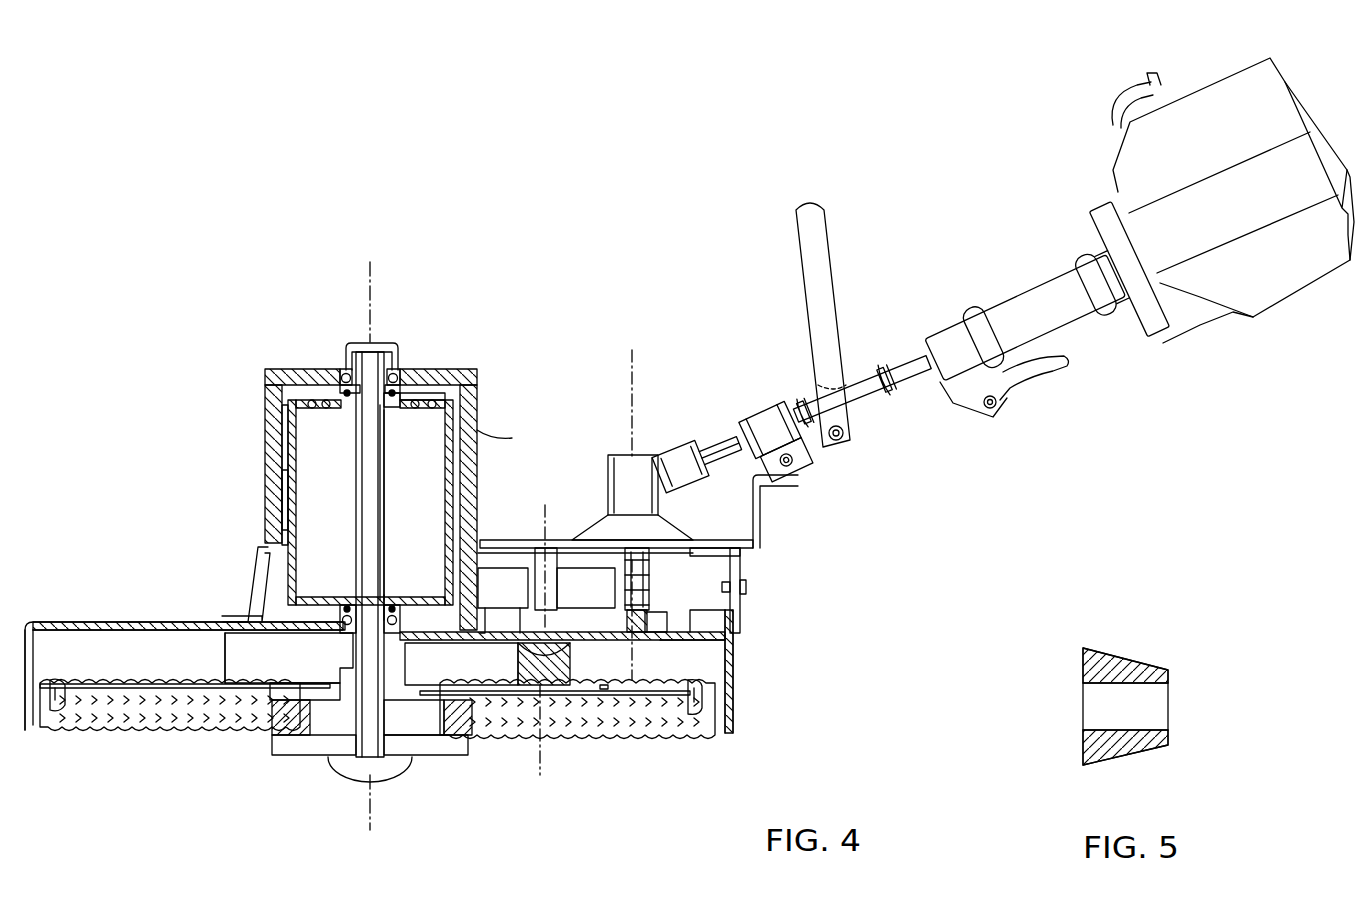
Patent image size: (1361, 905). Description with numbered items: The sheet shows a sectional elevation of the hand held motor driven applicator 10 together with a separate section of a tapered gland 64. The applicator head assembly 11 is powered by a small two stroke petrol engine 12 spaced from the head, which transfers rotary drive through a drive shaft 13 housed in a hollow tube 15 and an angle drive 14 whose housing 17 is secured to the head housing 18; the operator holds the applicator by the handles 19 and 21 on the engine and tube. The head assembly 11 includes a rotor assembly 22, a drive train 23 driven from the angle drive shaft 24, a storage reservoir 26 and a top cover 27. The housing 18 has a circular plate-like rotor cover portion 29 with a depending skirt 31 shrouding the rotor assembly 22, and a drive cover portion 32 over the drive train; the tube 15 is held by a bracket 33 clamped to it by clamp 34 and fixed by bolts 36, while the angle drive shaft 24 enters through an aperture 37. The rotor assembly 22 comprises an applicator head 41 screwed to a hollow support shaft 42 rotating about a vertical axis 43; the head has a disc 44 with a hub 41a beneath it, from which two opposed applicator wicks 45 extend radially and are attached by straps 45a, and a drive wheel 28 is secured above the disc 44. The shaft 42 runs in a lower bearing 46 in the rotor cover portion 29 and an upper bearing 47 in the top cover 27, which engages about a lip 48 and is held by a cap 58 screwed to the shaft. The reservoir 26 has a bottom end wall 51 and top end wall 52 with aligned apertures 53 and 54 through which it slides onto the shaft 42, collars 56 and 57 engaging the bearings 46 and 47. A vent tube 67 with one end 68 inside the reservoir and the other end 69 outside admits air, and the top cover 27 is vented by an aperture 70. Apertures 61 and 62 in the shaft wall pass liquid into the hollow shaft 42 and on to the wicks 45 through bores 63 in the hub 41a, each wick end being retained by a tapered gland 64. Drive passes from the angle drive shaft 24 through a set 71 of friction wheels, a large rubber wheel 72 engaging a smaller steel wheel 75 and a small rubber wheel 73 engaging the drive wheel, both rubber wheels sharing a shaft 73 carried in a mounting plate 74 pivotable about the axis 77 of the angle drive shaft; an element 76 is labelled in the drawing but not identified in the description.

In FIG. 4, the hand held motor driven applicator 10 is at (708, 195).
In FIG. 4, the applicator head assembly 11 is at (517, 328).
In FIG. 4, the two stroke petrol engine 12 is at (1065, 168).
In FIG. 4, the drive shaft 13 is at (875, 393).
In FIG. 4, the angle drive 14 is at (635, 455).
In FIG. 4, the hollow tube 15 is at (892, 372).
In FIG. 4, the angle drive housing 17 is at (685, 465).
In FIG. 4, the housing 18 is at (510, 530).
In FIG. 4, the handle 19 is at (1000, 310).
In FIG. 4, the handle 21 is at (830, 250).
In FIG. 4, the rotor assembly 22 is at (600, 797).
In FIG. 4, the drive train 23 is at (665, 672).
In FIG. 4, the angle drive shaft 24 is at (647, 565).
In FIG. 4, the storage reservoir 26 is at (258, 555).
In FIG. 4, the top cover 27 is at (270, 385).
In FIG. 4, the drive wheel 28 is at (225, 658).
In FIG. 4, the rotor cover portion 29 is at (103, 620).
In FIG. 4, the skirt 31 is at (30, 725).
In FIG. 4, the drive cover portion 32 is at (545, 537).
In FIG. 4, the bracket 33 is at (757, 495).
In FIG. 4, the clamp 34 is at (760, 425).
In FIG. 4, the bolts 36 is at (746, 588).
In FIG. 4, the aperture 37 is at (721, 566).
In FIG. 4, the applicator head 41 is at (262, 752).
In FIG. 4, the hub 41a is at (415, 760).
In FIG. 4, the hollow support shaft 42 is at (360, 513).
In FIG. 4, the vertical axis 43 is at (370, 283).
In FIG. 4, the disc 44 is at (105, 685).
In FIG. 4, the applicator wicks 45 is at (188, 730).
In FIG. 4, the straps 45a is at (72, 710).
In FIG. 4, the lower bearing 46 is at (345, 630).
In FIG. 4, the upper bearing 47 is at (405, 375).
In FIG. 4, the lip 48 is at (283, 515).
In FIG. 4, the bottom end wall 51 is at (310, 600).
In FIG. 4, the top end wall 52 is at (290, 438).
In FIG. 4, the central aperture 53 is at (392, 590).
In FIG. 4, the central aperture 54 is at (395, 407).
In FIG. 4, the collar 56 is at (405, 643).
In FIG. 4, the collar 57 is at (403, 374).
In FIG. 4, the cap 58 is at (391, 345).
In FIG. 4, the aperture 61 is at (390, 585).
In FIG. 4, the aperture 62 is at (395, 410).
In FIG. 4, the bore 63 is at (420, 755).
In FIG. 4, the tapered gland 64 is at (290, 755).
In FIG. 5, the tapered gland 64 is at (1100, 670).
In FIG. 4, the vent tube 67 is at (438, 400).
In FIG. 4, the vent tube end 68 is at (325, 407).
In FIG. 4, the vent tube end 69 is at (283, 475).
In FIG. 4, the aperture 70 is at (477, 455).
In FIG. 4, the set of friction drive wheels 71 is at (610, 690).
In FIG. 4, the large rubber wheel 72 is at (515, 578).
In FIG. 4, the small rubber wheel 73 is at (568, 653).
In FIG. 4, the mounting plate 74 is at (665, 620).
In FIG. 4, the steel wheel 75 is at (650, 612).
In FIG. 4, the axis 76 is at (550, 728).
In FIG. 4, the axis 77 is at (630, 375).